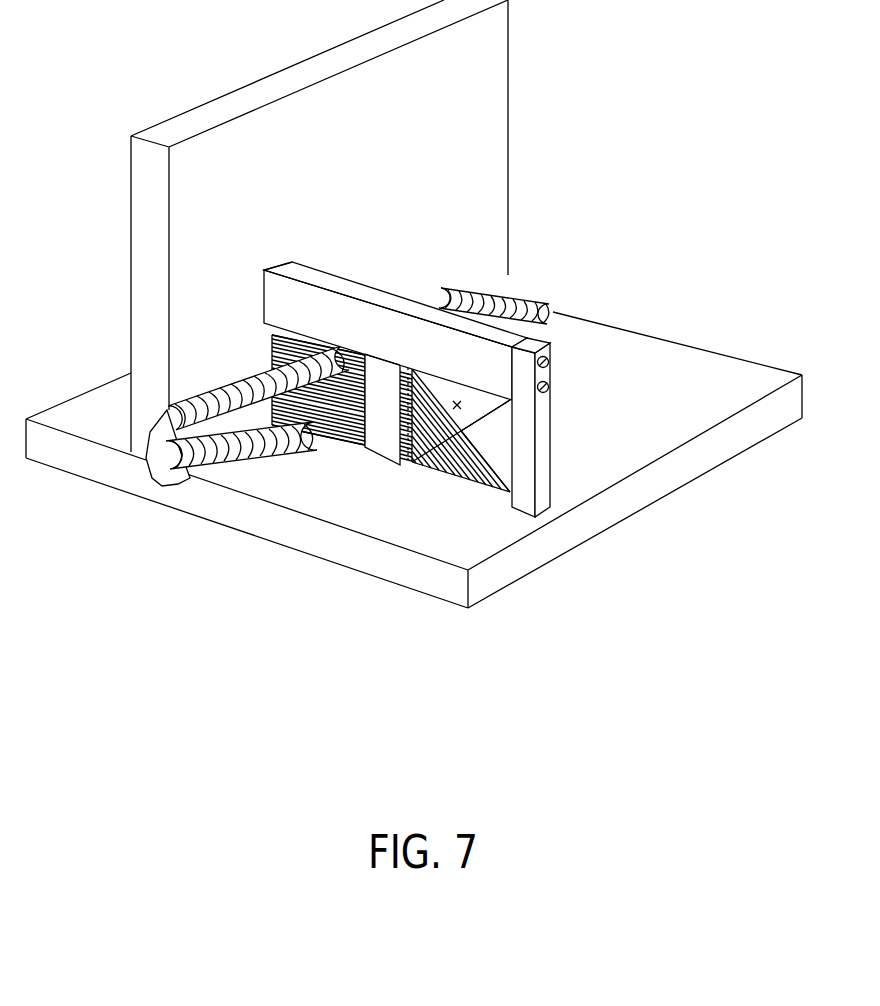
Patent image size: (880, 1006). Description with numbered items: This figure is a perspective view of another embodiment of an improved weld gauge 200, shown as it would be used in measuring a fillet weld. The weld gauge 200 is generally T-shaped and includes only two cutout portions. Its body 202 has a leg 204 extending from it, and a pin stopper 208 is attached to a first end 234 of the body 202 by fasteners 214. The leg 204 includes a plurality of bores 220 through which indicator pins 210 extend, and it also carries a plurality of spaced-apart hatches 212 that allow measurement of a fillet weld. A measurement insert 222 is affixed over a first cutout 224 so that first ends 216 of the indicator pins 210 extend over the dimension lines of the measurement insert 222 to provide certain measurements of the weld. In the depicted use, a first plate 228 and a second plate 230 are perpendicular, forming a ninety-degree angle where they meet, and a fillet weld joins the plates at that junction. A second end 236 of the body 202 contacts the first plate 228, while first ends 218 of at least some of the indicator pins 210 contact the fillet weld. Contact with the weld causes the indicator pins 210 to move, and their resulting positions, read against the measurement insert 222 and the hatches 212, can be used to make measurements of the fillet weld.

The weld gauge 200 is at (362, 268).
The body 202 is at (278, 297).
The leg 204 is at (378, 435).
The pin stopper 208 is at (542, 448).
The indicator pins 210 is at (335, 440).
The hatches 212 is at (398, 367).
The fasteners 214 is at (550, 362).
The first ends of indicator pins 216 is at (450, 472).
The first ends of indicator pins 218 is at (270, 346).
The bores 220 is at (406, 368).
The measurement insert 222 is at (495, 448).
The first cutout 224 is at (457, 400).
The first plate 228 is at (470, 92).
The second plate 230 is at (730, 397).
The first end of body 234 is at (512, 347).
The second end of body 236 is at (281, 262).